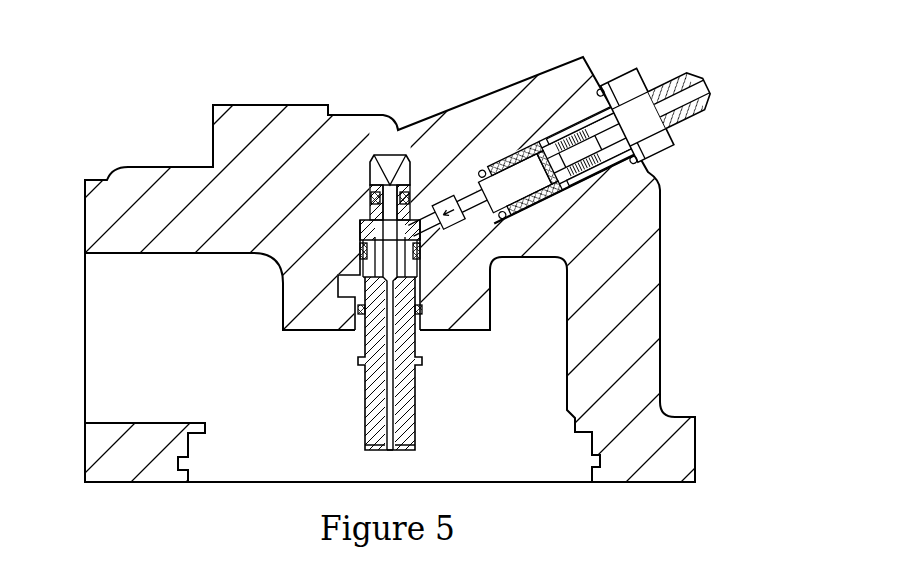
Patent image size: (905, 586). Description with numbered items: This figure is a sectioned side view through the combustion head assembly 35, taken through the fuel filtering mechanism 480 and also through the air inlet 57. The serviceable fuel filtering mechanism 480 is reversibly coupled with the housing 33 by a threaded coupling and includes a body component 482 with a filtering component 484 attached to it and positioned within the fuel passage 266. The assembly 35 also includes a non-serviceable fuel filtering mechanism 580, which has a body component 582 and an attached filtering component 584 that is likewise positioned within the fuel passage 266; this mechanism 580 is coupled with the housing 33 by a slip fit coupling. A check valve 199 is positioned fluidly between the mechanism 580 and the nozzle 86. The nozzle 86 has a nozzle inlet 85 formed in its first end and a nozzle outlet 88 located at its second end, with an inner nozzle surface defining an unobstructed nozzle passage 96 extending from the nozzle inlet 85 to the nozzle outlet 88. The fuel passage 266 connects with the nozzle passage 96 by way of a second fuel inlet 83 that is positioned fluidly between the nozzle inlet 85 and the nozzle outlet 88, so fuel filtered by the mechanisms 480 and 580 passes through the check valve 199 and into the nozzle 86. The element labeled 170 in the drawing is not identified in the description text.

The combustion head assembly 35 is at (63, 193).
The air inlet 57 is at (103, 255).
The housing 33 is at (85, 443).
The nozzle inlet 85 is at (388, 175).
The second fuel inlet 83 is at (360, 232).
The nozzle passage 96 is at (417, 364).
The nozzle 86 is at (416, 407).
The nozzle outlet 88 is at (390, 450).
The check valve 199 is at (448, 212).
The flow passage 170 is at (452, 223).
The non-serviceable fuel filtering mechanism 580 is at (518, 182).
The body component 582 is at (587, 149).
The filtering component 584 is at (601, 141).
The fuel passage 266 is at (588, 147).
The serviceable fuel filtering mechanism 480 is at (659, 104).
The body component 482 is at (681, 98).
The filtering component 484 is at (617, 126).